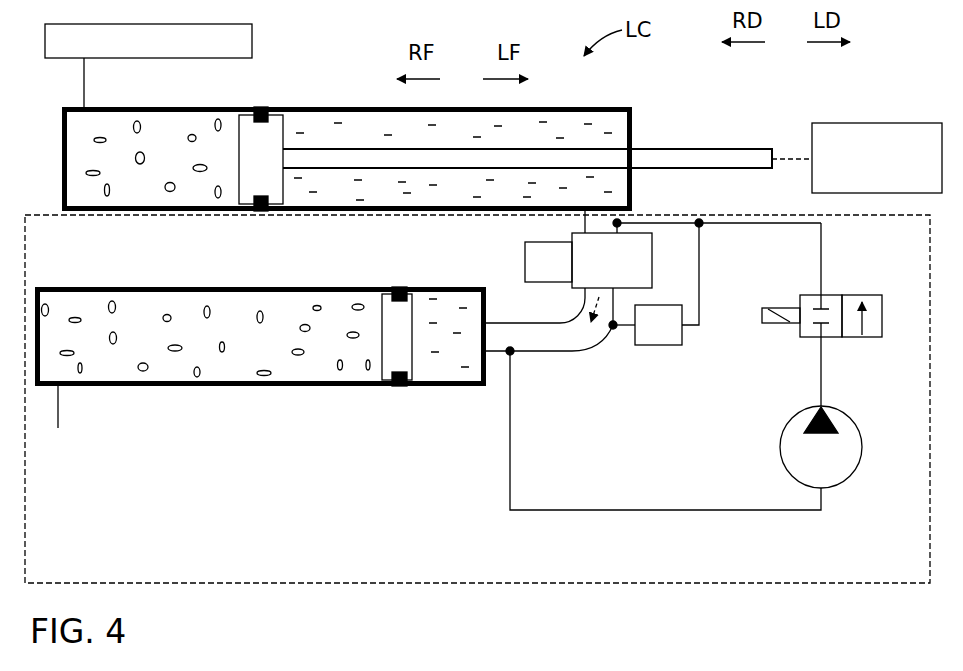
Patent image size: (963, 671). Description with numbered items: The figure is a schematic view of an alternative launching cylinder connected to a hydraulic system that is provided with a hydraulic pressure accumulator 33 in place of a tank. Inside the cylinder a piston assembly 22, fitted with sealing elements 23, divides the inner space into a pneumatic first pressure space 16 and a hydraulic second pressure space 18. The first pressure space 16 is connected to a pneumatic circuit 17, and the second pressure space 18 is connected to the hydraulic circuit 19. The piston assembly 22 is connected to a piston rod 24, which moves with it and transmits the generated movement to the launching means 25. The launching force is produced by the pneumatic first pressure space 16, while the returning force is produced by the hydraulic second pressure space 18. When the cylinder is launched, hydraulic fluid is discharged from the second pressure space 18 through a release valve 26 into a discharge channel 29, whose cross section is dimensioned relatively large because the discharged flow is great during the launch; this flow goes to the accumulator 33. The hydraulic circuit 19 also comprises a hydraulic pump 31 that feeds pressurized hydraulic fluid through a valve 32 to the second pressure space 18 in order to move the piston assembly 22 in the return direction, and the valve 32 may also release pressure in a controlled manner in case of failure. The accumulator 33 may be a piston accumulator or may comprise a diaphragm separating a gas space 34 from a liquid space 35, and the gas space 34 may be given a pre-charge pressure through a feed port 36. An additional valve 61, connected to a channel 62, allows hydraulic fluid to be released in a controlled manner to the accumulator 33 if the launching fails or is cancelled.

The first pressure space 16 is at (148, 211).
The pneumatic circuit 17 is at (110, 78).
The second pressure space 18 is at (340, 190).
The hydraulic circuit 19 is at (431, 470).
The piston assembly 22 is at (272, 135).
The sealing elements 23 is at (262, 107).
The piston rod 24 is at (675, 158).
The launching means 25 is at (858, 123).
The release valve 26 is at (513, 233).
The discharge channel 29 is at (560, 342).
The hydraulic pump 31 is at (790, 458).
The valve 32 is at (795, 355).
The hydraulic pressure accumulator 33 is at (206, 422).
The gas space 34 is at (123, 365).
The liquid space 35 is at (443, 365).
The feed port 36 is at (58, 412).
The additional valve 61 is at (653, 327).
The channel 62 is at (700, 267).